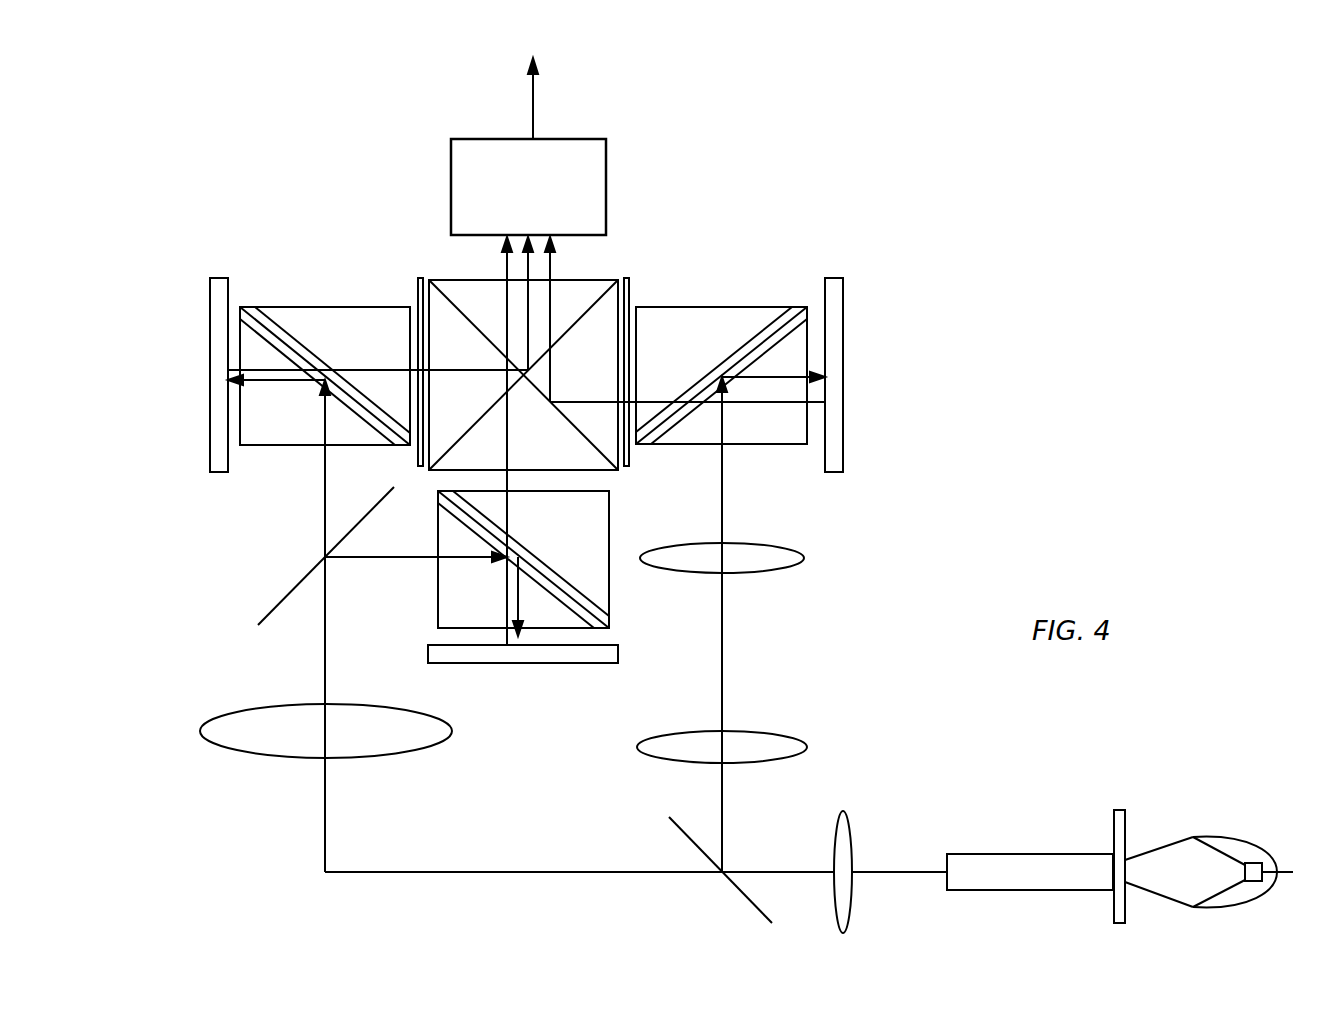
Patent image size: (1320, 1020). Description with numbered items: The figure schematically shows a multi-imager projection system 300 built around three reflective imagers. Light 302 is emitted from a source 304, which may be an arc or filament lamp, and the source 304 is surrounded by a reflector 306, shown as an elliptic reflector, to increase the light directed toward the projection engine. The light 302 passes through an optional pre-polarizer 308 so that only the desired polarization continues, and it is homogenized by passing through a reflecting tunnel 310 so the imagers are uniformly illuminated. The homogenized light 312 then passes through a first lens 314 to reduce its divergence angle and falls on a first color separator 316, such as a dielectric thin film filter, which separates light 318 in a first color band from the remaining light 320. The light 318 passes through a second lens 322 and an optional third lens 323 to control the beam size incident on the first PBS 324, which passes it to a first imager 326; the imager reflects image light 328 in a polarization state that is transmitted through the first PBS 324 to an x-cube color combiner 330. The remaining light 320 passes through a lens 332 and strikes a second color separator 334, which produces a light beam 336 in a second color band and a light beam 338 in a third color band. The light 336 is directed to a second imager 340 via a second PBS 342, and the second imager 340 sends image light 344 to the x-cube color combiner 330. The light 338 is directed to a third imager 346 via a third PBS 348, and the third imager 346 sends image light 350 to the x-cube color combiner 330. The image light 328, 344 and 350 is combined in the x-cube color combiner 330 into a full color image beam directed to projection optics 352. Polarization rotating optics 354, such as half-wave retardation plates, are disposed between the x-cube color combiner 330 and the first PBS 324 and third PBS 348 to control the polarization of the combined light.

The multi-imager projection system 300 is at (992, 328).
The light 302 is at (1157, 845).
The source 304 is at (1258, 862).
The reflector 306 is at (1242, 900).
The pre-polarizer 308 is at (1118, 810).
The reflecting tunnel 310 is at (1015, 854).
The homogenized light 312 is at (900, 873).
The first lens 314 is at (847, 812).
The first color separator 316 is at (740, 895).
The light in first color band 318 is at (722, 823).
The remaining light 320 is at (590, 882).
The second lens 322 is at (778, 733).
The third lens 323 is at (803, 568).
The first PBS 324 is at (742, 307).
The first imager 326 is at (843, 375).
The image light in first color band 328 is at (765, 403).
The x-cube color combiner 330 is at (593, 280).
The third lens 332 is at (240, 752).
The second color separator 334 is at (287, 597).
The light beam in second color band 336 is at (392, 557).
The light beam in third color band 338 is at (323, 471).
The second imager 340 is at (537, 663).
The second PBS 342 is at (609, 595).
The image light in second color band 344 is at (507, 474).
The third imager 346 is at (210, 283).
The third PBS 348 is at (310, 306).
The image light in third color band 350 is at (388, 350).
The projection optics 352 is at (652, 132).
The polarization rotating optics 354 is at (420, 283).